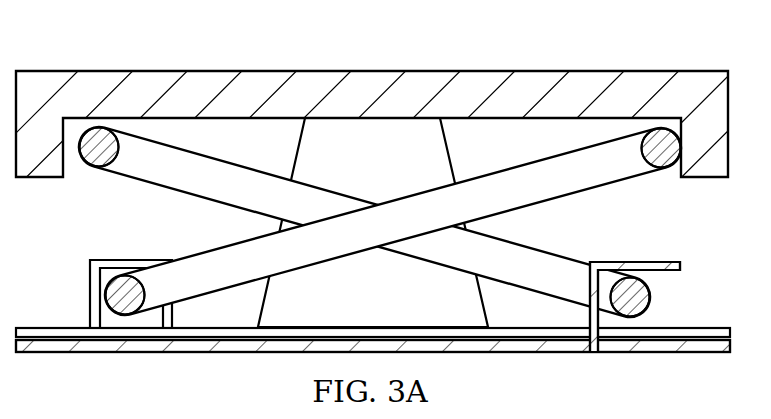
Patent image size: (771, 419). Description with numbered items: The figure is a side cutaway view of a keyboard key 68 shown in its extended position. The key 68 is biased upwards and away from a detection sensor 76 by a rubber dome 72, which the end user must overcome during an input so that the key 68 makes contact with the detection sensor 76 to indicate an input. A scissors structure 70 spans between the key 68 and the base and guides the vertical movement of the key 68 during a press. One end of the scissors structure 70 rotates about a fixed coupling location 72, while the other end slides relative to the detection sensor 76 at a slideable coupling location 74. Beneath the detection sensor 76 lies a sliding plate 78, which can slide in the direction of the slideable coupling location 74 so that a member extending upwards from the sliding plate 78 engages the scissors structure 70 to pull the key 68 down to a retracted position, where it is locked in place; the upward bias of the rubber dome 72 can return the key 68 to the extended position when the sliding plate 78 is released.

The keyboard key 68 is at (589, 80).
The scissors structure 70 is at (573, 183).
The rubber dome 72 is at (453, 155).
The slideable coupling location 74 is at (660, 261).
The detection sensor 76 is at (395, 327).
The sliding plate 78 is at (102, 354).